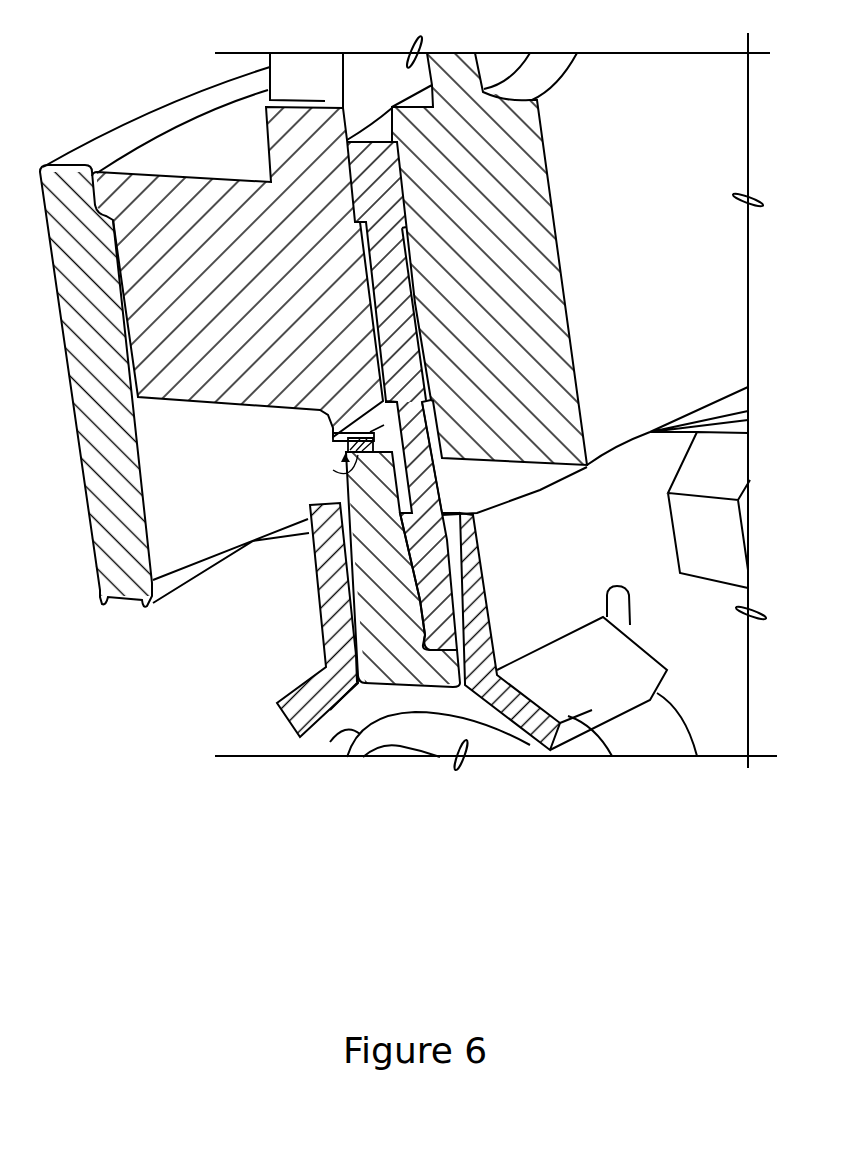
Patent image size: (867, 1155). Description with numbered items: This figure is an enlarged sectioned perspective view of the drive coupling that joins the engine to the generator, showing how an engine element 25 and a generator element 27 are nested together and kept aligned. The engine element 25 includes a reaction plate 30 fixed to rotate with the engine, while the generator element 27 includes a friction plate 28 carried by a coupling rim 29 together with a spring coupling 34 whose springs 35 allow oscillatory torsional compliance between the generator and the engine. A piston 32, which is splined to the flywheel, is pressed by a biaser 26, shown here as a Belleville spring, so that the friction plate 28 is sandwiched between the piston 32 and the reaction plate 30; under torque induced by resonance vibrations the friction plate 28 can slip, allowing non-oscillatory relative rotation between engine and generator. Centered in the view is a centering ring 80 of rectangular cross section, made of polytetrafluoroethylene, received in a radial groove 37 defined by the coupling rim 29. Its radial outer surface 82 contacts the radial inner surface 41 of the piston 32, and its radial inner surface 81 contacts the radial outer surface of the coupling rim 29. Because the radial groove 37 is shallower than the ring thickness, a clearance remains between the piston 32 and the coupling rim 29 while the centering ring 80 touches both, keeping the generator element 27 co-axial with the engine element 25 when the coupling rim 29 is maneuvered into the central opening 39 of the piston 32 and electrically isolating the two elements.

The engine element 25 is at (167, 167).
The biaser 26 is at (97, 433).
The generator element 27 is at (443, 482).
The friction plate 28 is at (405, 338).
The coupling rim 29 is at (317, 573).
The reaction plate 30 is at (493, 289).
The piston 32 is at (240, 290).
The spring coupling 34 is at (543, 584).
The springs 35 is at (320, 742).
The radial groove 37 is at (375, 450).
The central opening 39 is at (345, 468).
The radial inner surface 41 is at (370, 432).
The centering ring 80 is at (347, 447).
The radial inner surface 81 is at (345, 462).
The radial outer surface 82 is at (336, 434).